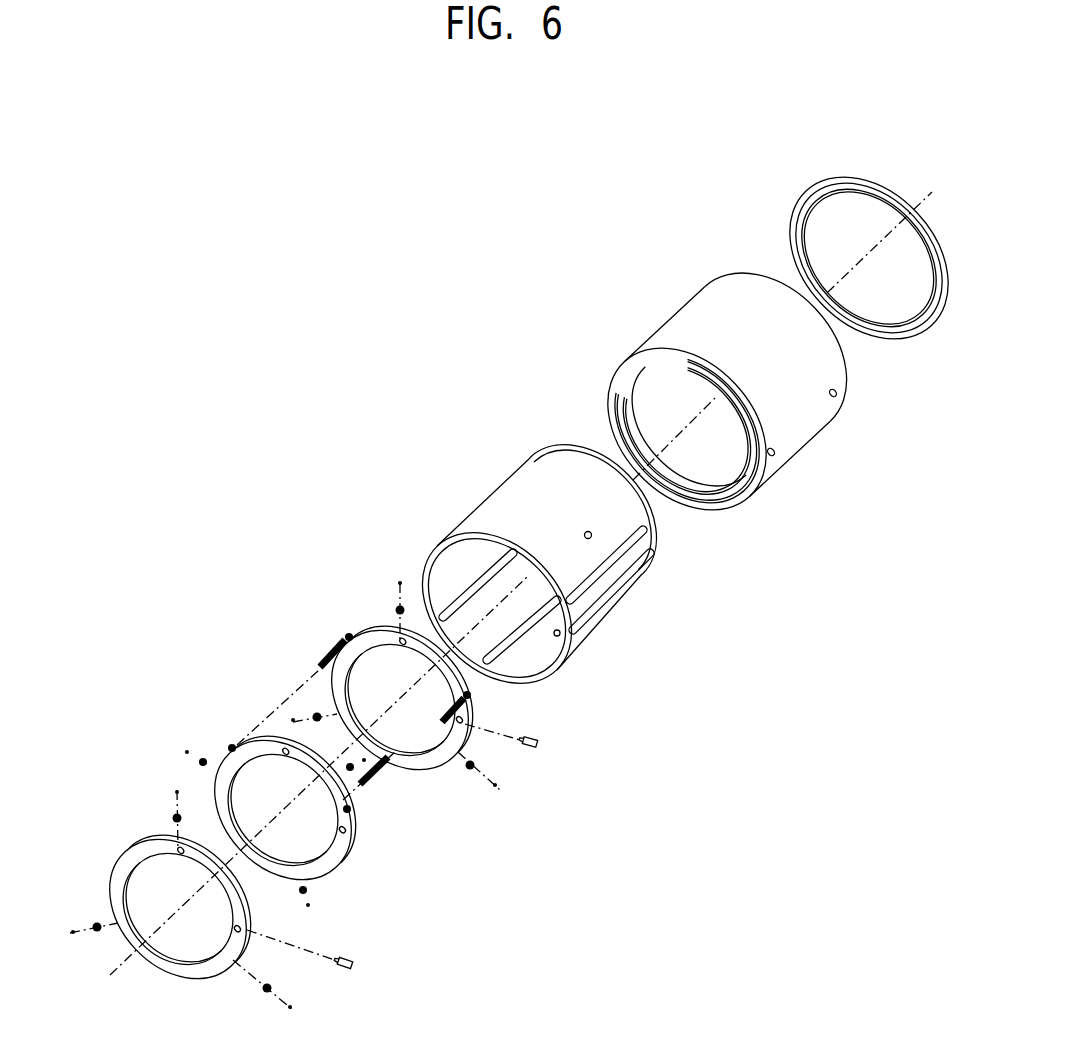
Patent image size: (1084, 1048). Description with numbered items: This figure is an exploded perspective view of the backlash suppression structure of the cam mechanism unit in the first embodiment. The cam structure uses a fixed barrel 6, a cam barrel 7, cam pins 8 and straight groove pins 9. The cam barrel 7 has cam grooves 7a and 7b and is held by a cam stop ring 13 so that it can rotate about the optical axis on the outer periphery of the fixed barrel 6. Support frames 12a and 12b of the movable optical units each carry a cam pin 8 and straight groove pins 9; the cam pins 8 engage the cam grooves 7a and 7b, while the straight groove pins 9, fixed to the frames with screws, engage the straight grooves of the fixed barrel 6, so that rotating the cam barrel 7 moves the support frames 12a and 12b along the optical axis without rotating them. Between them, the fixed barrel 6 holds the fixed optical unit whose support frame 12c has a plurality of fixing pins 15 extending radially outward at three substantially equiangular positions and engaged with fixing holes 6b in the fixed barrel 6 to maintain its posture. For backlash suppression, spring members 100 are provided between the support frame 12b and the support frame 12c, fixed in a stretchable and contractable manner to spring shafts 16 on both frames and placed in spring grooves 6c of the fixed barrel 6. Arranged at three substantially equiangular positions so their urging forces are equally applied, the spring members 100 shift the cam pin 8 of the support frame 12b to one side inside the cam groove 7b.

The fixed barrel 6 is at (527, 496).
The fixing holes 6b is at (597, 537).
The spring grooves 6c is at (592, 583).
The cam barrel 7 is at (710, 300).
The cam groove 7a is at (647, 418).
The cam groove 7b is at (682, 385).
The cam pin 8 is at (355, 964).
The straight groove pins 9 is at (397, 610).
The support frame 12a is at (152, 842).
The support frame 12b is at (383, 633).
The support frame 12c is at (343, 837).
The cam stop ring 13 is at (840, 178).
The fixing pins 15 is at (200, 758).
The spring shafts 16 is at (345, 646).
The spring members 100 is at (327, 653).